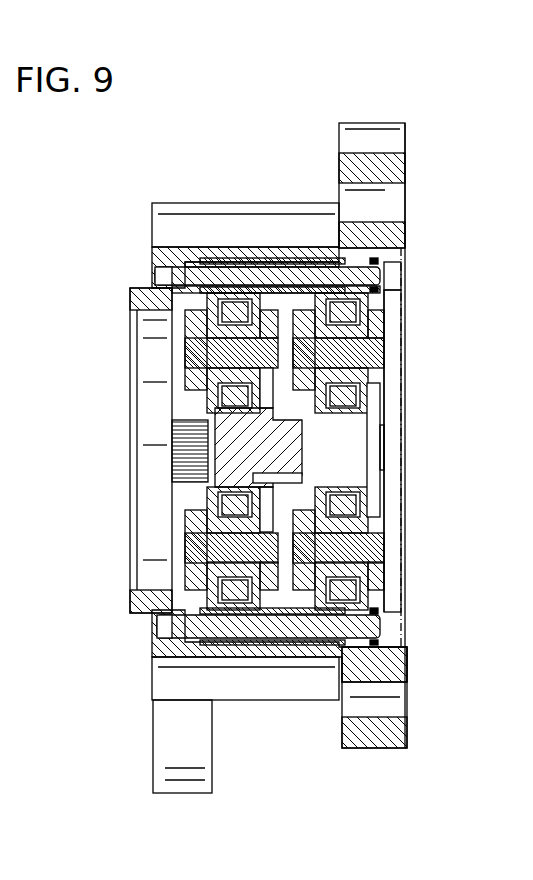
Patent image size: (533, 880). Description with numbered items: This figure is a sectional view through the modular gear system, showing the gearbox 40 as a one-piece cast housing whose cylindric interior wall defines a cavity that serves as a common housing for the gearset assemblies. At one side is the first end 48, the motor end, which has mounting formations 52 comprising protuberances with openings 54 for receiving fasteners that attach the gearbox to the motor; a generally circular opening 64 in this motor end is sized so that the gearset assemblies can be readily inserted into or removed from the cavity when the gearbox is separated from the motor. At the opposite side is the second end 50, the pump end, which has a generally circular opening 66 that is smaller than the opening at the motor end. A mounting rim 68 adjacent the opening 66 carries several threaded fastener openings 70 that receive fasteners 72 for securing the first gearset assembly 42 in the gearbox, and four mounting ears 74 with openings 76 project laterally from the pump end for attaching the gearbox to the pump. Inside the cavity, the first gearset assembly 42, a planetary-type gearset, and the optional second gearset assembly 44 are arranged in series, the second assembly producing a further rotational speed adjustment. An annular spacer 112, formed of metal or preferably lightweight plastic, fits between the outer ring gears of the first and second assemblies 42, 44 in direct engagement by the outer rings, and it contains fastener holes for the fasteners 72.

The gearbox 40 is at (255, 203).
The annular spacer 112 is at (290, 258).
The threaded fastener openings 70 is at (190, 262).
The mounting rim 68 is at (152, 283).
The mounting formations 52 is at (388, 123).
The fasteners 72 is at (406, 272).
The first end 48 is at (408, 321).
The second gearset assembly 44 is at (375, 392).
The generally circular opening 64 is at (406, 552).
The openings 54 is at (392, 716).
The mounting ears 74 is at (153, 750).
The openings 76 is at (0, 333).
The second end 50 is at (130, 346).
The first gearset assembly 42 is at (178, 410).
The generally circular opening 66 is at (130, 508).